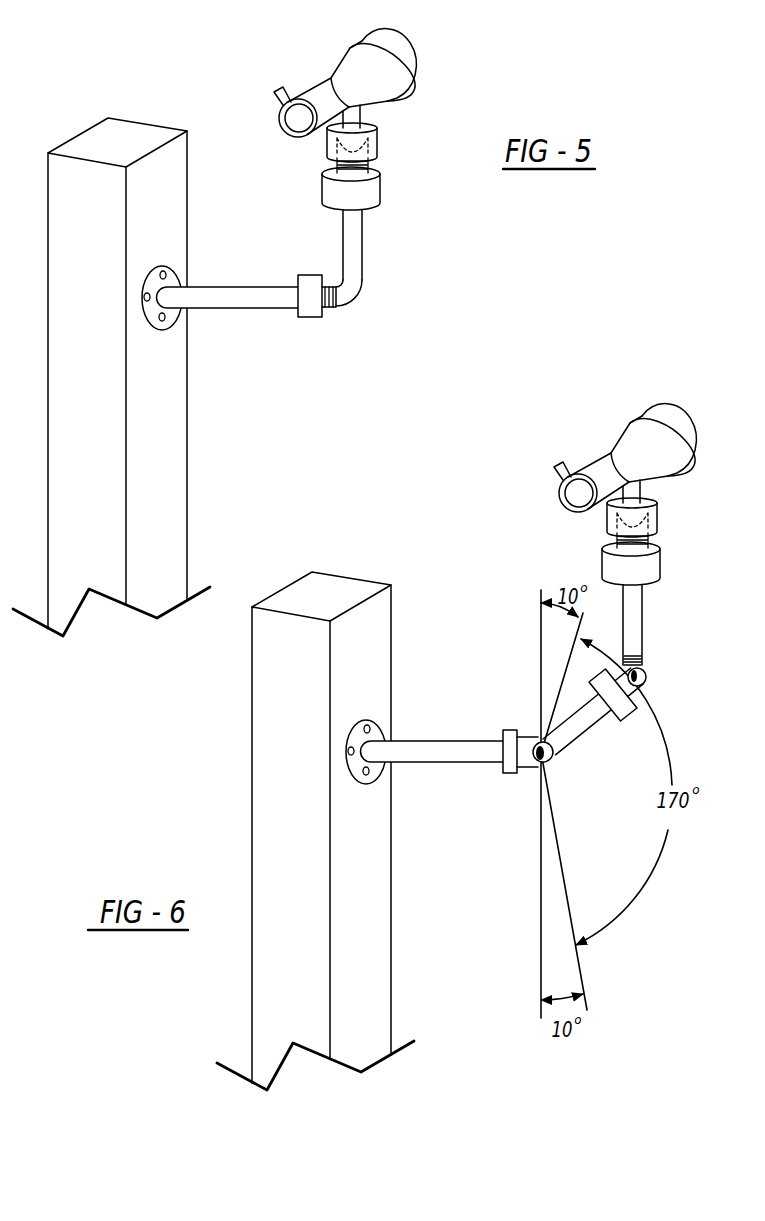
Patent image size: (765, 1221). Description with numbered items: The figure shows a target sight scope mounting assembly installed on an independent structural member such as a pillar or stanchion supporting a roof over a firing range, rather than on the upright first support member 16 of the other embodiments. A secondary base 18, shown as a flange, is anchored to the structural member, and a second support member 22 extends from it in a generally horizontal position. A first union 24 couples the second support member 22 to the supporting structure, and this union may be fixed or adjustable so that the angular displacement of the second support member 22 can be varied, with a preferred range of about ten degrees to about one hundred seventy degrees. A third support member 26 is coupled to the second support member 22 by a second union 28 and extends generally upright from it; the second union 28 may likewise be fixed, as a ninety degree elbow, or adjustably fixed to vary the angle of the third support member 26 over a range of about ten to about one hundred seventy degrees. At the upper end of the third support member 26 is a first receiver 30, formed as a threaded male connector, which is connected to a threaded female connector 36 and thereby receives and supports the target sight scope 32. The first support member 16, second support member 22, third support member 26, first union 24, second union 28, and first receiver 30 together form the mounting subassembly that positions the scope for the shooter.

In FIG. 6, the first support member 16 is at (418, 756).
In FIG. 5, the secondary base 18 is at (170, 282).
In FIG. 6, the secondary base 18 is at (375, 736).
In FIG. 5, the second support member 22 is at (234, 299).
In FIG. 6, the second support member 22 is at (585, 732).
In FIG. 6, the first union 24 is at (523, 760).
In FIG. 5, the third support member 26 is at (364, 240).
In FIG. 6, the third support member 26 is at (644, 616).
In FIG. 5, the second union 28 is at (310, 309).
In FIG. 6, the second union 28 is at (625, 713).
In FIG. 5, the first receiver 30 is at (381, 185).
In FIG. 6, the first receiver 30 is at (670, 567).
In FIG. 5, the target sight scope 32 is at (330, 49).
In FIG. 6, the target sight scope 32 is at (601, 445).
In FIG. 5, the threaded female connector 36 is at (378, 138).
In FIG. 6, the threaded female connector 36 is at (671, 507).